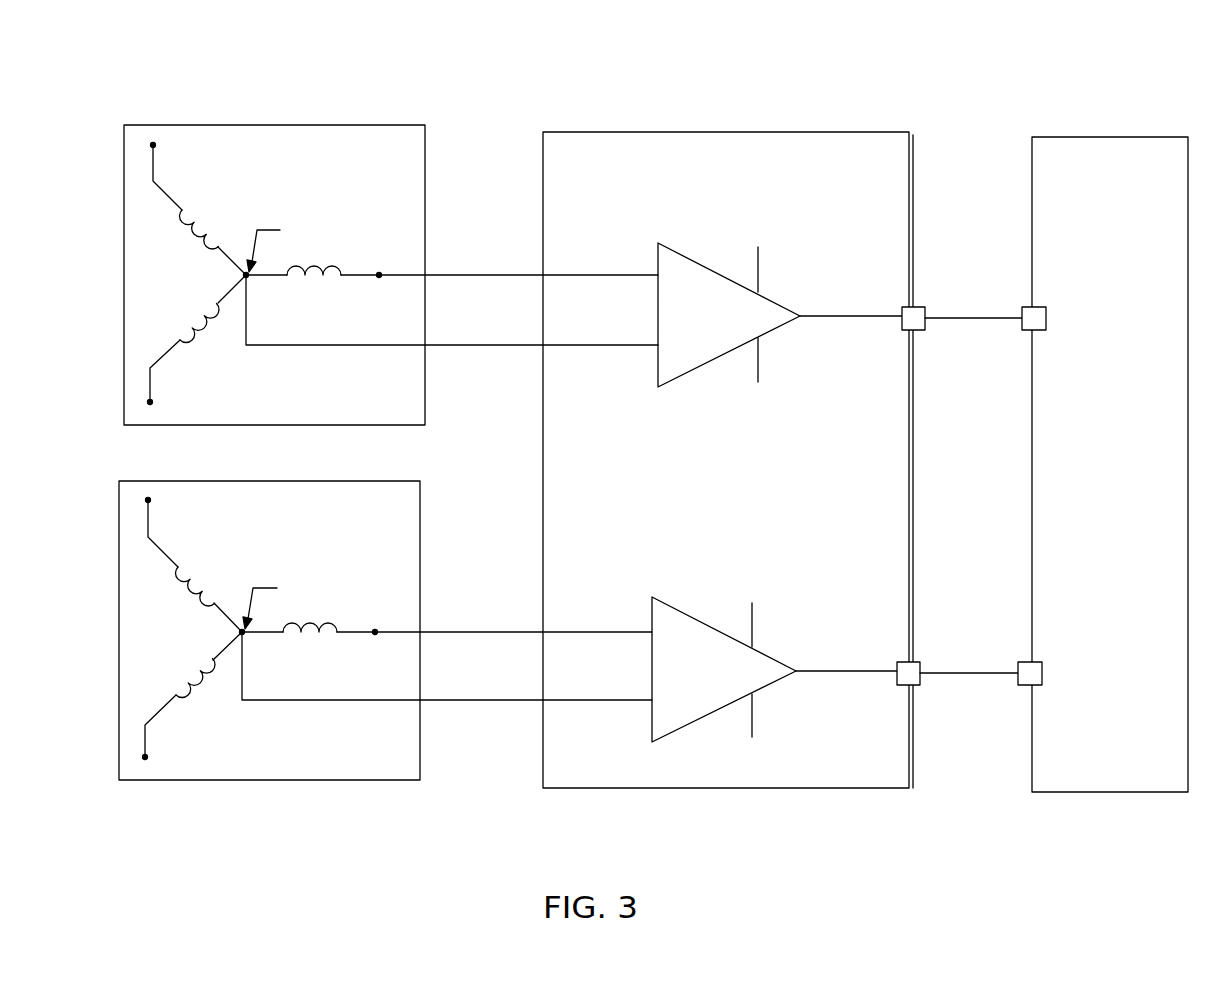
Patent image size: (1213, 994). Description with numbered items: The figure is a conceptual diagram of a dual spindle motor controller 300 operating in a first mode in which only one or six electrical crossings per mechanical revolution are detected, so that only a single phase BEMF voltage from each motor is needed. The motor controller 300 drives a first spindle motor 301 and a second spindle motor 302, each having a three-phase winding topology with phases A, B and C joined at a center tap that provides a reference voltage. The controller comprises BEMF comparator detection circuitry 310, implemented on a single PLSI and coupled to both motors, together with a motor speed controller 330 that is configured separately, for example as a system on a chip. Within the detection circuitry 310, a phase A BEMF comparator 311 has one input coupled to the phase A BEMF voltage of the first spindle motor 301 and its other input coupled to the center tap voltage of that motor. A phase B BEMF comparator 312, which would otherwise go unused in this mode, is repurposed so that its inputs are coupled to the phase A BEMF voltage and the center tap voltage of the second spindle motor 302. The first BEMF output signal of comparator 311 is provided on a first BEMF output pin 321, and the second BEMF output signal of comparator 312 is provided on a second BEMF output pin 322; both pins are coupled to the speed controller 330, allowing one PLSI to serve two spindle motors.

The dual spindle motor controller 300 is at (1080, 81).
The first spindle motor 301 is at (162, 123).
The second spindle motor 302 is at (236, 781).
The BEMF comparator detection circuitry 310 is at (683, 789).
The phase A BEMF comparator 311 is at (733, 330).
The phase B BEMF comparator 312 is at (729, 687).
The first BEMF output pin 321 is at (926, 330).
The second BEMF output pin 322 is at (918, 685).
The motor speed controller 330 is at (1130, 522).